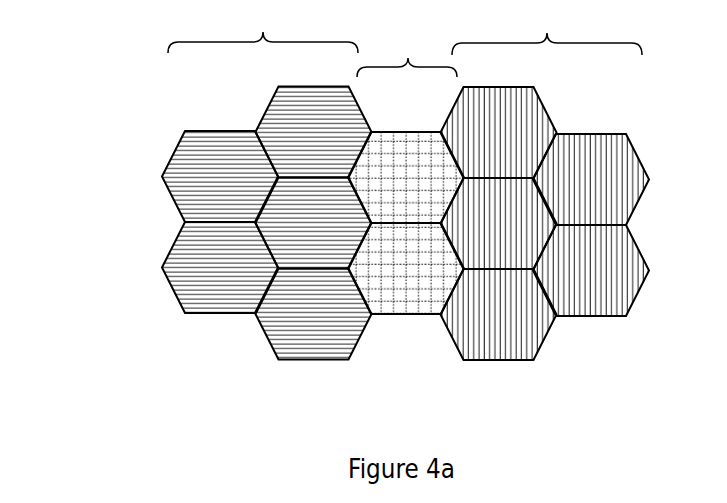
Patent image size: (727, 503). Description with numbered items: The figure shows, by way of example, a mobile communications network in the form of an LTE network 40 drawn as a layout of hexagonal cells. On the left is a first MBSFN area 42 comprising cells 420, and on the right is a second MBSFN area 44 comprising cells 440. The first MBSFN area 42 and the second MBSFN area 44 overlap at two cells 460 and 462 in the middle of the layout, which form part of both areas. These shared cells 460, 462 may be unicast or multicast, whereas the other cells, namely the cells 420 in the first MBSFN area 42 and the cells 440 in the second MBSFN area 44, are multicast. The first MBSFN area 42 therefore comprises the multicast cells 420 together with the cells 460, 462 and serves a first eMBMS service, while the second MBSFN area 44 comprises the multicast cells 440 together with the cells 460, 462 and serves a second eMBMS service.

The LTE network 40 is at (105, 62).
The first MBSFN area 42 is at (256, 380).
The second MBSFN area 44 is at (543, 374).
The cells 420 is at (267, 223).
The cells 440 is at (545, 223).
The cell 460 is at (406, 177).
The cell 462 is at (406, 268).